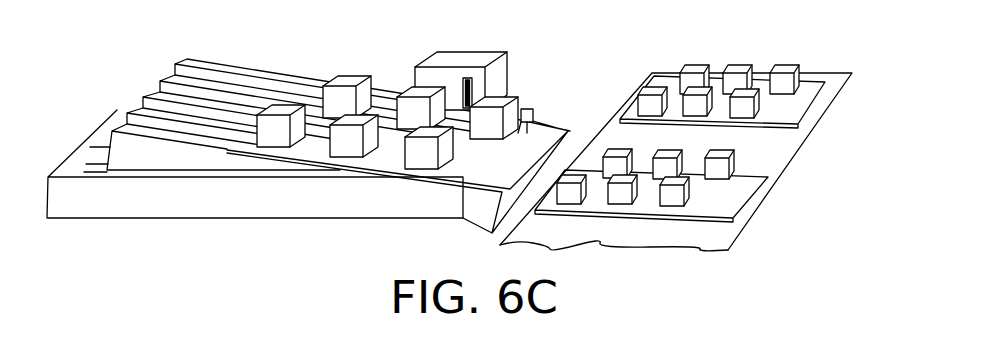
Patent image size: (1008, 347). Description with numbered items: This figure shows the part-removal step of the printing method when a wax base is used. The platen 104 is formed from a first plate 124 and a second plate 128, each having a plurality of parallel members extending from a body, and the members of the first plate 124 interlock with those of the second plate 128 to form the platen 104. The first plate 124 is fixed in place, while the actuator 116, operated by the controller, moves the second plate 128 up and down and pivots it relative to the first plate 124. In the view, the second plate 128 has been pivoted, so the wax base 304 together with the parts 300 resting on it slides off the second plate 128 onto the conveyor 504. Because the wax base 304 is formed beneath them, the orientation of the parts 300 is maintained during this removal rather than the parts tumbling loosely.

The platen 104 is at (133, 71).
The actuator 116 is at (464, 58).
The first plate 124 is at (60, 203).
The second plate 128 is at (548, 127).
The parts 300 is at (492, 100).
The wax base 304 is at (483, 168).
The conveyor 504 is at (778, 150).